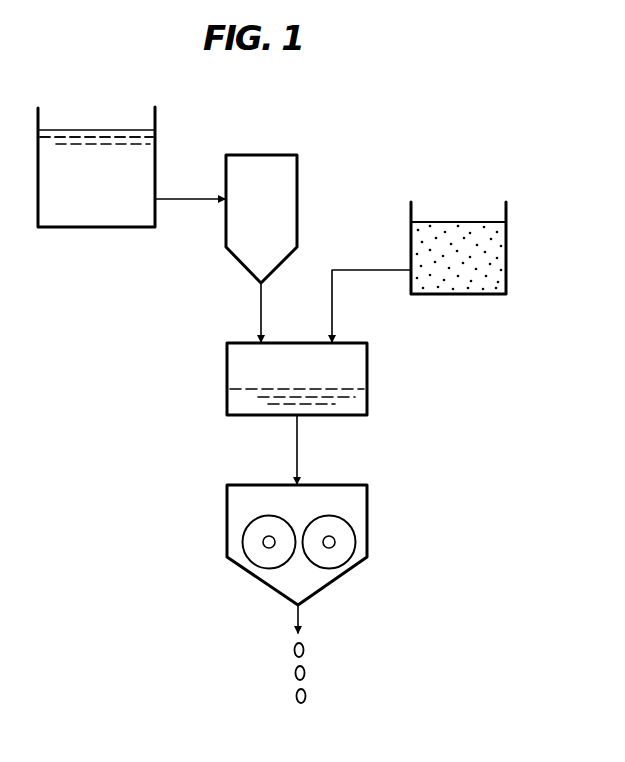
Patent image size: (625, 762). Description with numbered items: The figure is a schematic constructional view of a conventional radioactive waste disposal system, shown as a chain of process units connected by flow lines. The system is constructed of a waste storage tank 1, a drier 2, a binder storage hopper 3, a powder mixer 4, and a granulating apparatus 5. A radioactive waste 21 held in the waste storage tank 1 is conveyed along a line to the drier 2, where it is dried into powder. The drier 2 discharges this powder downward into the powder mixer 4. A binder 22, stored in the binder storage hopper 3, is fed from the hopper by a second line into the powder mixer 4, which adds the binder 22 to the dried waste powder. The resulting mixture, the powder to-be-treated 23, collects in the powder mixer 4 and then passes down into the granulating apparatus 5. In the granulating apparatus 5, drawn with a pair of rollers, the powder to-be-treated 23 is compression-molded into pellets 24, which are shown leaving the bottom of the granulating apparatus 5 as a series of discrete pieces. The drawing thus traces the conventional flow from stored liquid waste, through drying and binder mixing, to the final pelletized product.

The waste storage tank 1 is at (155, 118).
The drier 2 is at (258, 155).
The binder storage hopper 3 is at (411, 218).
The powder mixer 4 is at (227, 373).
The granulating apparatus 5 is at (227, 527).
The radioactive waste 21 is at (93, 228).
The binder 22 is at (470, 292).
The powder to-be-treated 23 is at (362, 400).
The pellets 24 is at (293, 673).